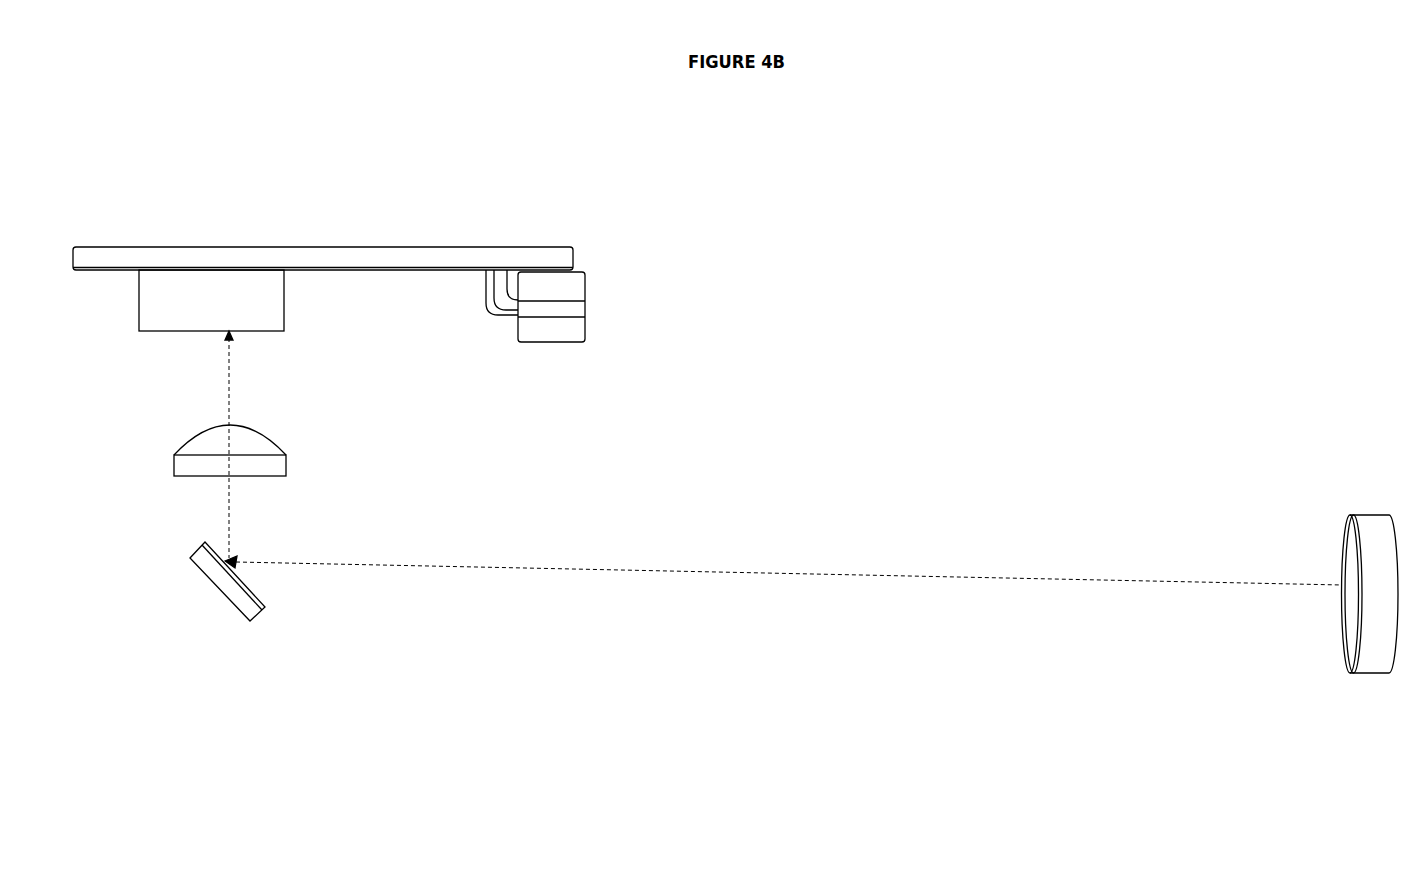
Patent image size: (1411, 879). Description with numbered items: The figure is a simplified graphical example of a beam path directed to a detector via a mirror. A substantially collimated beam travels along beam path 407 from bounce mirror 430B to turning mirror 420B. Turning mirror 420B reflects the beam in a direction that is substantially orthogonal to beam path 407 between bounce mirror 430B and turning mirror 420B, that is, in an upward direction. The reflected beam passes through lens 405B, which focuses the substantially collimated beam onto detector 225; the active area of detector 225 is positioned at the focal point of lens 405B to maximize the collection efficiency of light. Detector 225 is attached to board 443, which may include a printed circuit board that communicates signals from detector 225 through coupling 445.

The board 443 is at (328, 247).
The detector 225 is at (284, 312).
The coupling 445 is at (585, 292).
The lens 405B is at (270, 440).
The turning mirror 420B is at (228, 612).
The beam path 407 is at (650, 570).
The bounce mirror 430B is at (1342, 638).